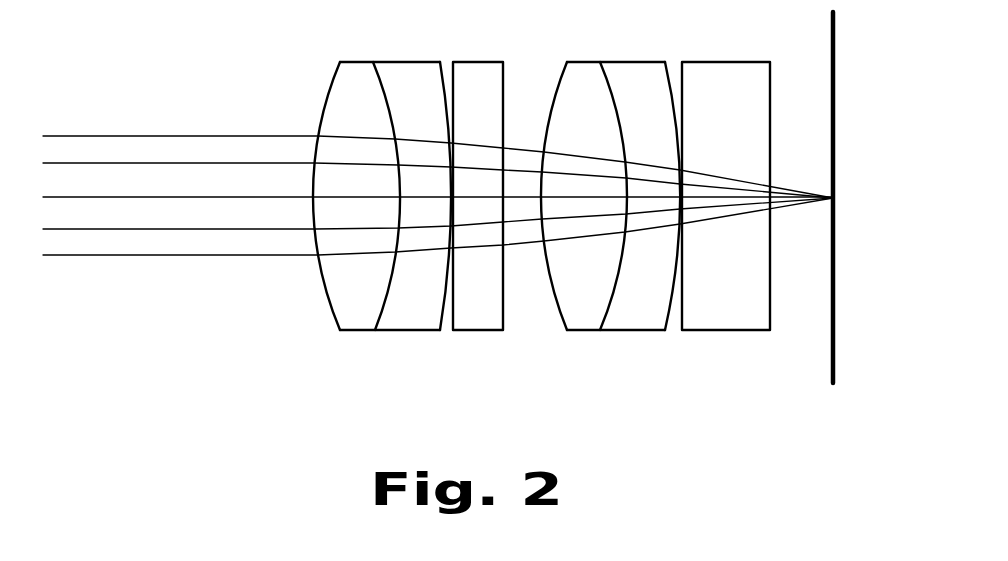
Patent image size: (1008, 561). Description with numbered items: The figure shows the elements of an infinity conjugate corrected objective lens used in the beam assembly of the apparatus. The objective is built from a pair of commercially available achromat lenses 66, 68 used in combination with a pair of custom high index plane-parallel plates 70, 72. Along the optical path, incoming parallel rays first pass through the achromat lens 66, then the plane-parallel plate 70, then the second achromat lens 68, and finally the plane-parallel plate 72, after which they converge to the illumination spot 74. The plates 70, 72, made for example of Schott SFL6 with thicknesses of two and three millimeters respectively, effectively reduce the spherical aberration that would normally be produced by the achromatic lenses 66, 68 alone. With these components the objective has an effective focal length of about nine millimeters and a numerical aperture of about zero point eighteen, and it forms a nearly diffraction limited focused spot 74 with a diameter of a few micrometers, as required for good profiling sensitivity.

The achromat lens 66 is at (408, 70).
The high index plane-parallel plate 70 is at (477, 70).
The achromat lens 68 is at (633, 70).
The high index plane-parallel plate 72 is at (722, 70).
The illumination spot 74 is at (833, 198).